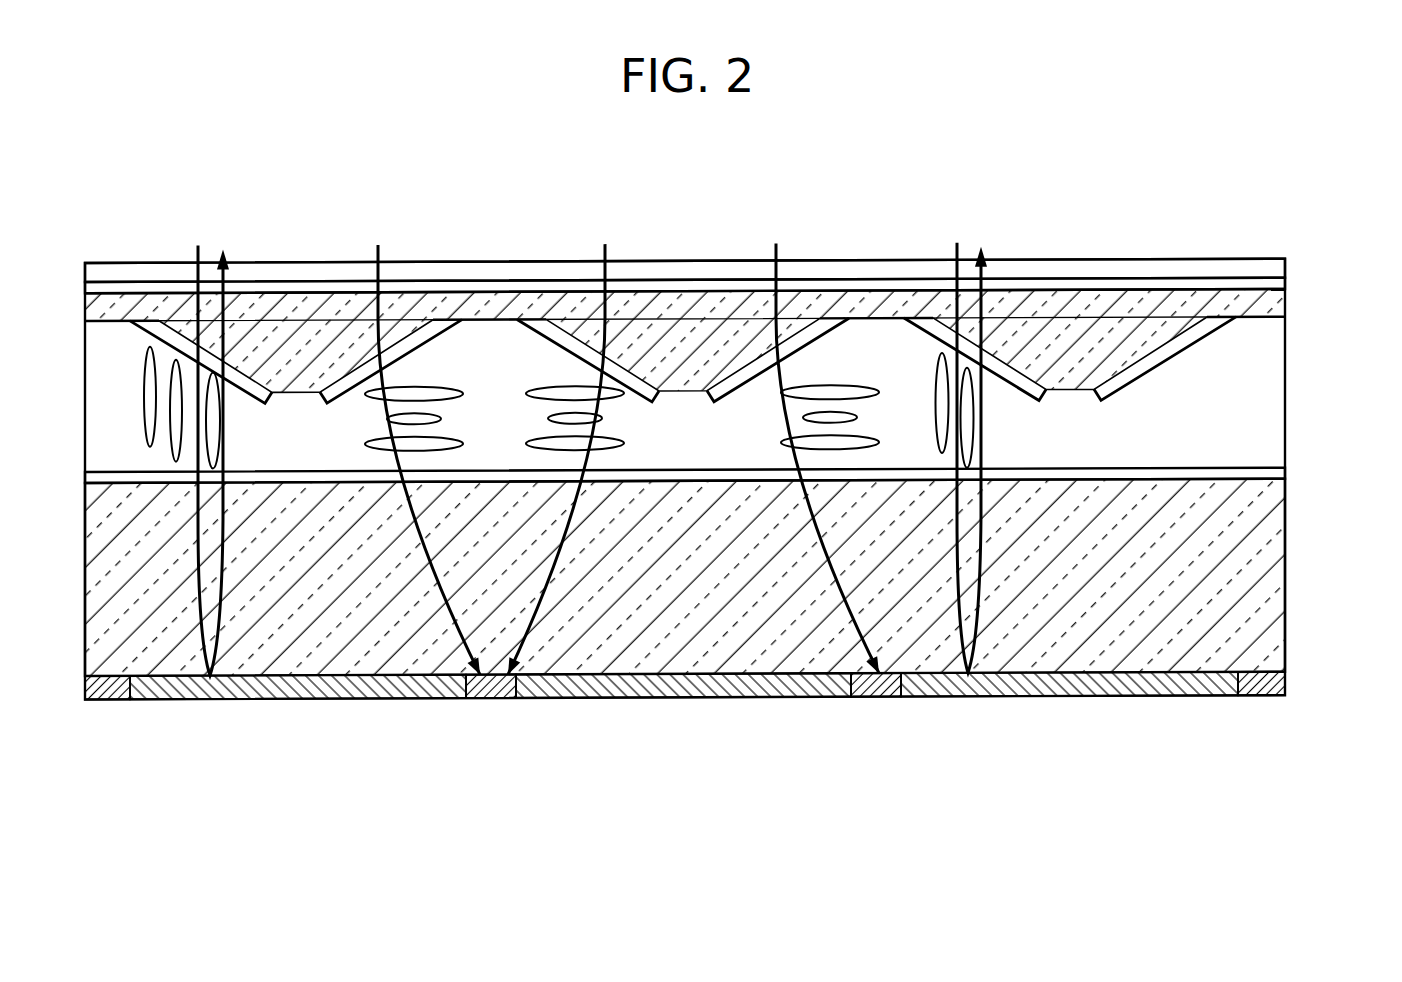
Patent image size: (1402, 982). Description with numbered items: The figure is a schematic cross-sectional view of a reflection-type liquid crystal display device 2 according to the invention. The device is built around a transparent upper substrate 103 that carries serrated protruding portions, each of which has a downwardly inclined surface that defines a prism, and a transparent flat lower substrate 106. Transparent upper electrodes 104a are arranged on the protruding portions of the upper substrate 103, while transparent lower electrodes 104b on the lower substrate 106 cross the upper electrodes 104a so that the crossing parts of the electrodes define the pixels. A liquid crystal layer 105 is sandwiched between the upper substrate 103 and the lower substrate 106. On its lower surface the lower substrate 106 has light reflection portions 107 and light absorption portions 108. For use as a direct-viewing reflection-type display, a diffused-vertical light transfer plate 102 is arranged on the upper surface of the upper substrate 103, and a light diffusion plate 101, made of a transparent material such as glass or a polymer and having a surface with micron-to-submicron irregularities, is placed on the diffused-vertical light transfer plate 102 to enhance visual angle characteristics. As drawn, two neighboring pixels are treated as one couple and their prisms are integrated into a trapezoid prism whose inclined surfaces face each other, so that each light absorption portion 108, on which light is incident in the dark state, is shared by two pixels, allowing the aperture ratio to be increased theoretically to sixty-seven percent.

The reflection-type liquid crystal display device 2 is at (670, 232).
The light diffusion plate 101 is at (1270, 270).
The diffused-vertical light transfer plate 102 is at (1272, 283).
The upper substrate 103 is at (1272, 303).
The upper electrodes 104a is at (1190, 338).
The liquid crystal layer 105 is at (1268, 417).
The lower electrodes 104b is at (1268, 475).
The lower substrate 106 is at (1270, 532).
The light reflection portions 107 is at (635, 687).
The light absorption portions 108 is at (495, 687).